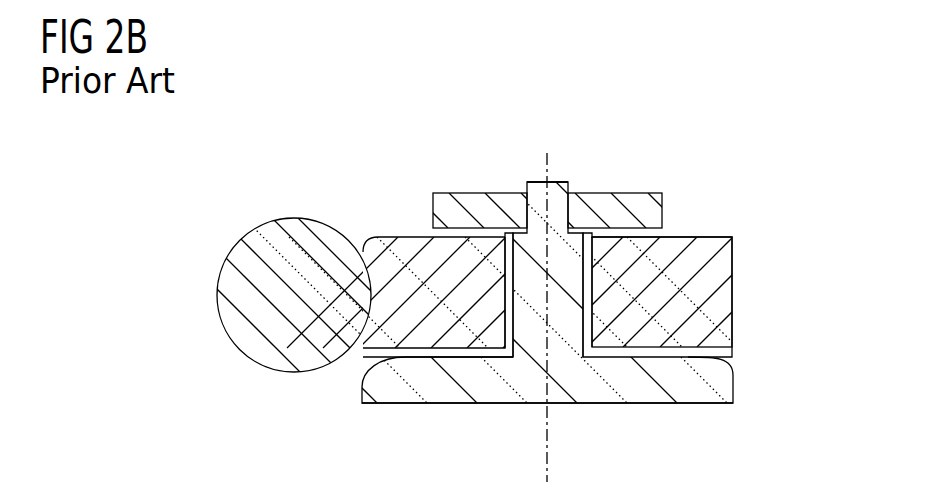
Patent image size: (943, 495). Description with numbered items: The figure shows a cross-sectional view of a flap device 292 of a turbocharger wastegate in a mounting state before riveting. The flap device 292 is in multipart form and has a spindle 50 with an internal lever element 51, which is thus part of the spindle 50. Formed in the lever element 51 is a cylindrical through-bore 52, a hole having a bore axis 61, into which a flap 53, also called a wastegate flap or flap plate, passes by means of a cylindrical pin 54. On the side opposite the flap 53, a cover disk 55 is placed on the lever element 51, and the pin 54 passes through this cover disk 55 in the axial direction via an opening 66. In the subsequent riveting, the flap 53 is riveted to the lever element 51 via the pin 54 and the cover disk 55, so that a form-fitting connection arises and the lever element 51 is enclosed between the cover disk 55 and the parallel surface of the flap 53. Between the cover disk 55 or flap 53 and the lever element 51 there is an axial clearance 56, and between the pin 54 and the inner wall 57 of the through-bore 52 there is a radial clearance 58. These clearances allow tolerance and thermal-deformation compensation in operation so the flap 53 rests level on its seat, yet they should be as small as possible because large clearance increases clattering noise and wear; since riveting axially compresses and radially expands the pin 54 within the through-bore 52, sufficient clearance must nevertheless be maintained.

The flap device 292 is at (727, 118).
The spindle 50 is at (263, 333).
The lever element 51 is at (397, 262).
The through-bore 52 is at (600, 318).
The flap 53 is at (690, 380).
The pin 54 is at (541, 247).
The cover disk 55 is at (647, 215).
The axial clearance 56 is at (464, 227).
The inner wall 57 is at (467, 360).
The radial clearance 58 is at (593, 265).
The bore axis 61 is at (549, 467).
The opening 66 is at (574, 170).